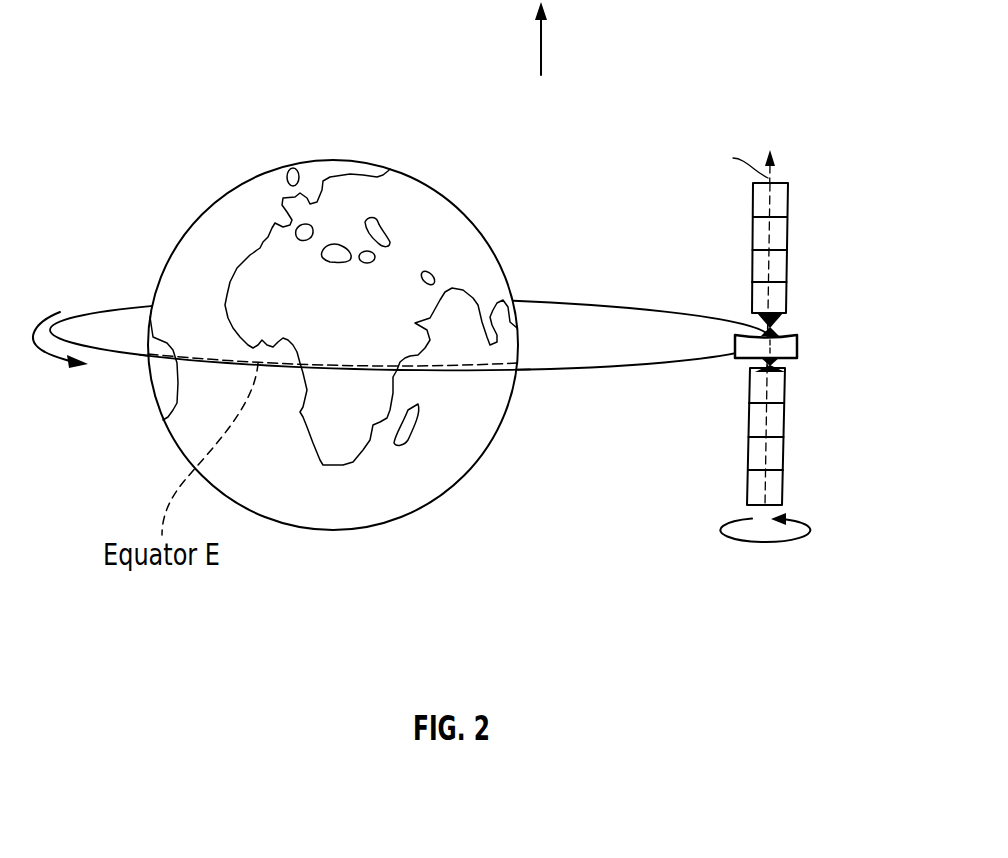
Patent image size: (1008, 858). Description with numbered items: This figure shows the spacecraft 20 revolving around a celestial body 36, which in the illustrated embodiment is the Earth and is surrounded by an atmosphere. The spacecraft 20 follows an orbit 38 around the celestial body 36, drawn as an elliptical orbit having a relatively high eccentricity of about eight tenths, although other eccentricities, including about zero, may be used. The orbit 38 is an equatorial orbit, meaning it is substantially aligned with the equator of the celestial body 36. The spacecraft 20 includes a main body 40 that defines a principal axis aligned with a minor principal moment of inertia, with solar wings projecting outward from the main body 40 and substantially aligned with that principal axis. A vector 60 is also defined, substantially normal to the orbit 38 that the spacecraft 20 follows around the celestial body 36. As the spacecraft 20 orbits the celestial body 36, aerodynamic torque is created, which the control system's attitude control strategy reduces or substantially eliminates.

The spacecraft 20 is at (736, 334).
The celestial body 36 is at (442, 220).
The orbit 38 is at (107, 350).
The main body 40 is at (794, 335).
The vector 60 is at (543, 50).